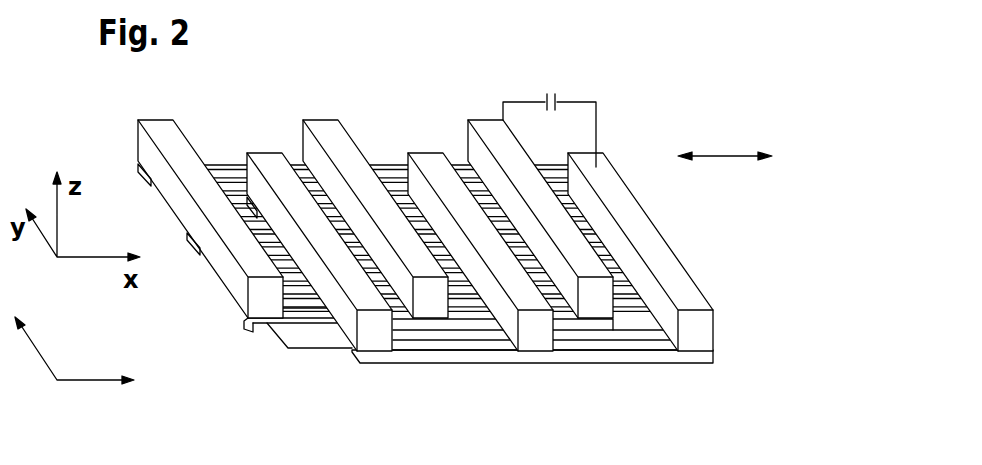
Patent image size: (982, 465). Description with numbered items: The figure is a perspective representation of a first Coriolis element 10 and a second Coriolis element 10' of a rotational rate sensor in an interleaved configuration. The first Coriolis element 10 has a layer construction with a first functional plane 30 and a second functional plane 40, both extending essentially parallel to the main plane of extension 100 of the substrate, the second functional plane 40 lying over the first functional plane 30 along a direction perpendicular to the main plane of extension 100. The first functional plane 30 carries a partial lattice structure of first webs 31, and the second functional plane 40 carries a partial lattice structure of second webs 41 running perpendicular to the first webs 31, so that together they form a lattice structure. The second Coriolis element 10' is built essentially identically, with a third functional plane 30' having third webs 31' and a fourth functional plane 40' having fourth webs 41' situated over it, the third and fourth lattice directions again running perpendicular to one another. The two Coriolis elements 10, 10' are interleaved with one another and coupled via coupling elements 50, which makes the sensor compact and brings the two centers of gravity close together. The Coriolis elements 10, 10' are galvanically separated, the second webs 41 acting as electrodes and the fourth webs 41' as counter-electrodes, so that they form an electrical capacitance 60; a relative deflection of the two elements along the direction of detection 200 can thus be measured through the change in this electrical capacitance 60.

The first Coriolis element 10 is at (486, 187).
The second Coriolis element 10' is at (472, 223).
The first functional plane 30 is at (286, 355).
The third functional plane 30' is at (556, 384).
The first webs 31 is at (503, 378).
The third webs 31' is at (535, 394).
The second functional plane 40 is at (210, 237).
The fourth functional plane 40' is at (680, 252).
The second webs 41 is at (384, 279).
The fourth webs 41' is at (489, 295).
The coupling elements 50 is at (315, 350).
The electrical capacitance 60 is at (580, 100).
The main plane of extension 100 is at (74, 350).
The direction of detection 200 is at (725, 174).